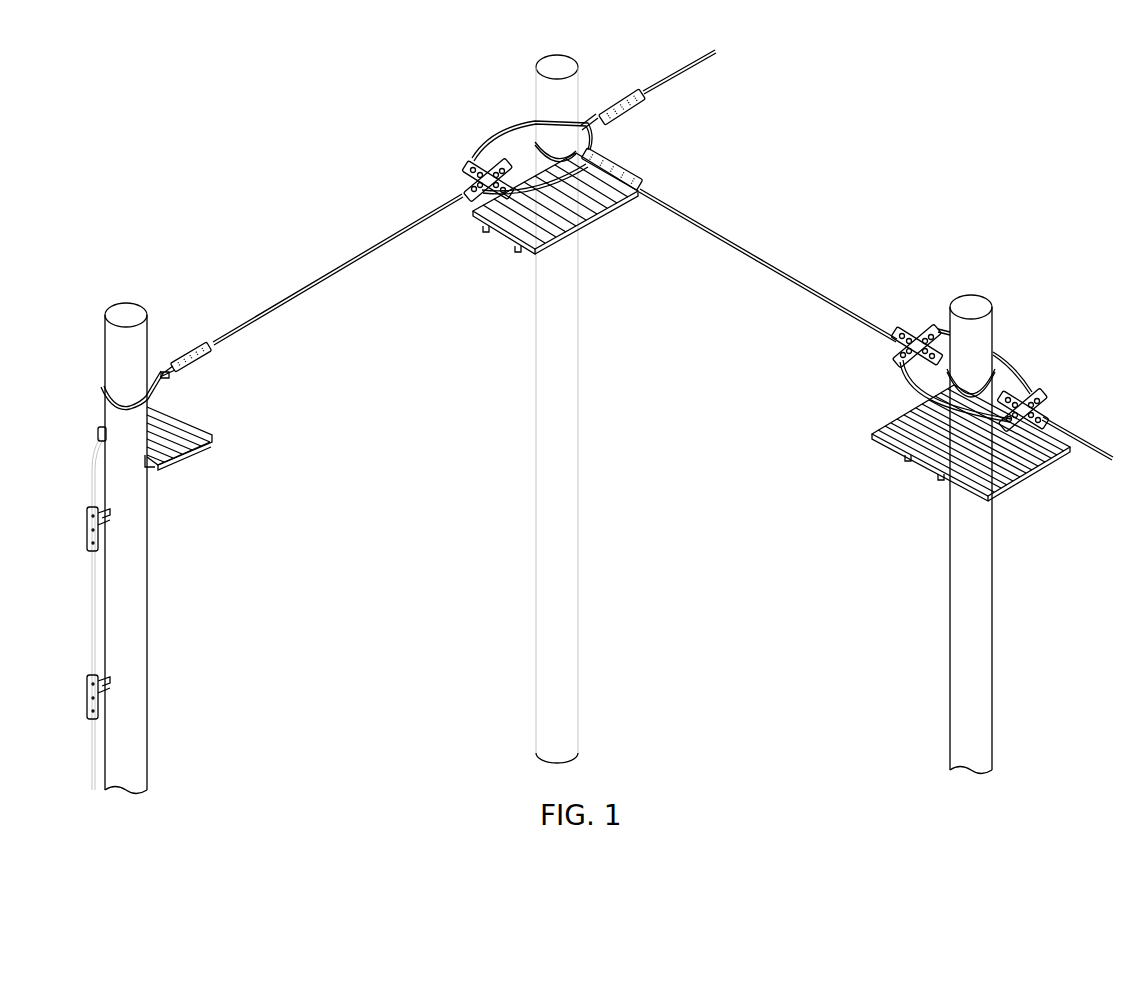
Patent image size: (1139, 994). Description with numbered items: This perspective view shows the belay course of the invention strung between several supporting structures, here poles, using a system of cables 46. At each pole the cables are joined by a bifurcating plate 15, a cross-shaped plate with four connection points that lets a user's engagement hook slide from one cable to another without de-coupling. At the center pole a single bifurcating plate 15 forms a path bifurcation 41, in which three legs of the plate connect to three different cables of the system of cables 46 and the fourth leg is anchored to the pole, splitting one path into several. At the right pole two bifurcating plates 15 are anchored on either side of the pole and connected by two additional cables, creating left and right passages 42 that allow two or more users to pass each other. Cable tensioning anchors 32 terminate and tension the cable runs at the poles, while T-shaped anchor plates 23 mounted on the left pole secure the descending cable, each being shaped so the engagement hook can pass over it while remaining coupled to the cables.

The bifurcating plate 15 is at (475, 178).
The T-shaped anchor plate 23 is at (84, 524).
The cable tensioning anchor 32 is at (200, 366).
The path bifurcation 41 is at (461, 109).
The left and right passages 42 is at (1007, 270).
The system of cables 46 is at (367, 251).